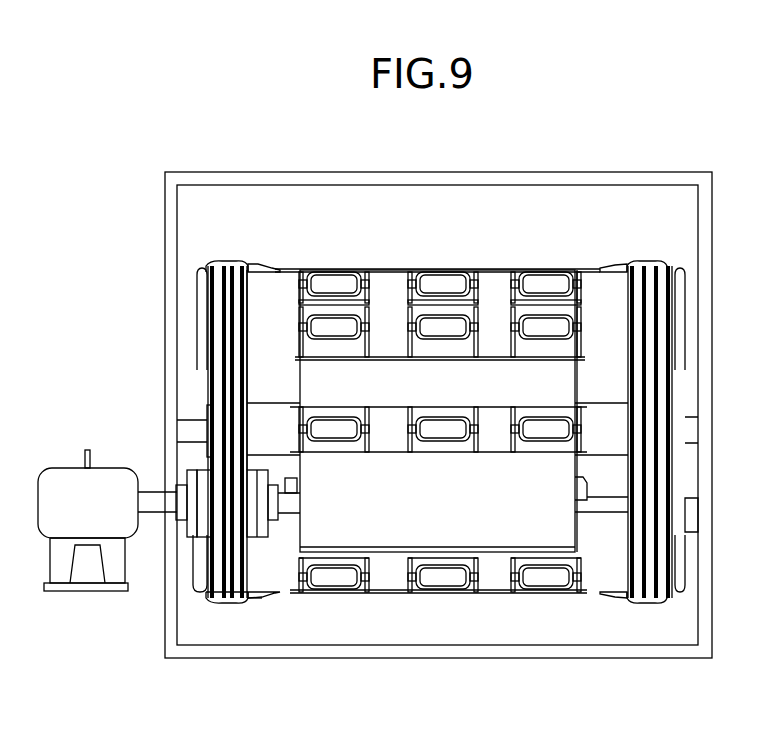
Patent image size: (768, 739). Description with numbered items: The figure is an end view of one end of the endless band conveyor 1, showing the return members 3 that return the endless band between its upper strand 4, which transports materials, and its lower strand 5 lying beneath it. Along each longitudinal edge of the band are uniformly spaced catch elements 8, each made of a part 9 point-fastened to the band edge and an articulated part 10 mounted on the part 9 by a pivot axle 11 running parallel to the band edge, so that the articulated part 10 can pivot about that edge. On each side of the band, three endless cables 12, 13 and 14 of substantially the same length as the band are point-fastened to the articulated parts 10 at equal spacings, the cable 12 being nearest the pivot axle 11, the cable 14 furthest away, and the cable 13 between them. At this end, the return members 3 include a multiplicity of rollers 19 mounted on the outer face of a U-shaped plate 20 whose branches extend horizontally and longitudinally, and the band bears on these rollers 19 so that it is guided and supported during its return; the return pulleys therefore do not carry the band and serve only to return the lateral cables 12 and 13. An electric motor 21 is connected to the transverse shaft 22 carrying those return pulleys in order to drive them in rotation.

The endless band conveyor 1 is at (156, 188).
The return members 3 is at (582, 550).
The upper strand 4 is at (343, 270).
The lower strand 5 is at (485, 580).
The catch elements 8 is at (647, 250).
The fastened part 9 is at (264, 597).
The articulated part 10 is at (215, 602).
The pivot axle 11 is at (260, 604).
The endless cable 12 is at (242, 262).
The endless cable 13 is at (224, 262).
The endless cable 14 is at (197, 302).
The rollers 19 is at (441, 318).
The U-shaped plate 20 is at (385, 533).
The electric motor 21 is at (97, 483).
The transverse shaft 22 is at (273, 417).